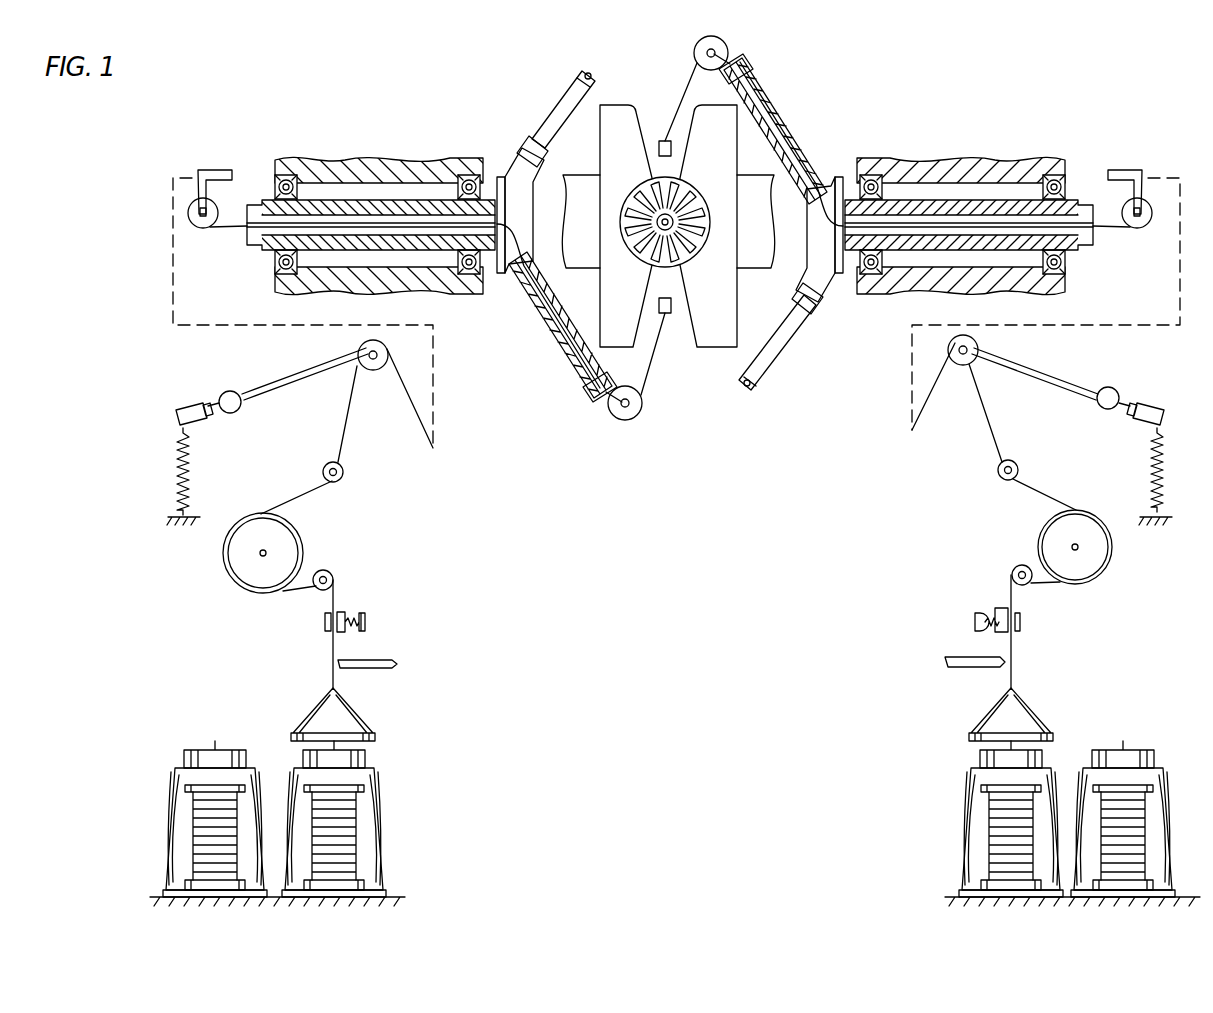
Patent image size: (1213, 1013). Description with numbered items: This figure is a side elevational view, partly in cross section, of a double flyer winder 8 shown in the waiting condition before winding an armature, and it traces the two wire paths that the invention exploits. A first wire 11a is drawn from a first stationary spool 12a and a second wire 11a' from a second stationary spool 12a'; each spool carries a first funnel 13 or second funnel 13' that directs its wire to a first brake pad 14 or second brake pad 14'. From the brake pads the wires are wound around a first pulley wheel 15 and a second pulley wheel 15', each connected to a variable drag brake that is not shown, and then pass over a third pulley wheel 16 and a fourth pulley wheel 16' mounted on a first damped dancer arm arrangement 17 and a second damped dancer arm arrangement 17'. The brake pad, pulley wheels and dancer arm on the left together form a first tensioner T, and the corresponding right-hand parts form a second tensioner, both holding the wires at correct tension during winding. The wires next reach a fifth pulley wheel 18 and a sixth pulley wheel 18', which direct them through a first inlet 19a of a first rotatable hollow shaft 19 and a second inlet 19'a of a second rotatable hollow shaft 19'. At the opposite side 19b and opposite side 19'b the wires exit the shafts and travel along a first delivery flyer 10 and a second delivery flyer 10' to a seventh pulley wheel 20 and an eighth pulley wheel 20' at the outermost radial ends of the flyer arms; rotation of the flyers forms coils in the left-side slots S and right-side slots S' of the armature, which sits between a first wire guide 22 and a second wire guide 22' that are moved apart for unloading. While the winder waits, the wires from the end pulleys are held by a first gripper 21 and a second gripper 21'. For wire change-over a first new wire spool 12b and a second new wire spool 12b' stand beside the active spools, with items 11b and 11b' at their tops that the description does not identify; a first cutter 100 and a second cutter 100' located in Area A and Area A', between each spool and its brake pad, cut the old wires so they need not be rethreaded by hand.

The double flyer winder 8 is at (699, 442).
The first delivery flyer 10 is at (558, 325).
The second delivery flyer 10' is at (778, 131).
The first wire 11a is at (360, 567).
The second wire 11a' is at (987, 559).
The bobbin tube 11b is at (239, 744).
The bobbin tube 11b' is at (1152, 741).
The first stationary spool 12a is at (357, 819).
The second stationary spool 12a' is at (966, 819).
The first new wire spool 12b is at (208, 790).
The second new wire spool 12b' is at (1123, 788).
The first funnel 13 is at (363, 712).
The second funnel 13' is at (1028, 711).
The first brake pad 14 is at (383, 621).
The second brake pad 14' is at (1023, 623).
The first pulley wheel 15 is at (287, 549).
The second pulley wheel 15' is at (1094, 547).
The third pulley wheel 16 is at (385, 401).
The fourth pulley wheel 16' is at (957, 398).
The first damped dancer arm arrangement 17 is at (267, 436).
The second damped dancer arm arrangement 17' is at (1072, 436).
The fifth pulley wheel 18 is at (191, 169).
The sixth pulley wheel 18' is at (1152, 169).
The first rotatable hollow shaft 19 is at (371, 175).
The second rotatable hollow shaft 19' is at (969, 180).
The first inlet 19a is at (250, 205).
The second inlet 19'a is at (1098, 169).
The opposite side of first hollow shaft 19b is at (490, 195).
The opposite side of second hollow shaft 19'b is at (869, 180).
The seventh pulley wheel 20 is at (612, 416).
The eighth pulley wheel 20' is at (736, 53).
The first gripper 21 is at (671, 346).
The second gripper 21' is at (662, 108).
The first wire guide 22 is at (607, 226).
The second wire guide 22' is at (732, 226).
The slots S is at (657, 224).
The slots S' is at (702, 222).
The first tensioner T is at (443, 543).
The Area A is at (283, 695).
The Area A' is at (1087, 659).
The first cutter 100 is at (412, 659).
The second cutter 100' is at (940, 685).